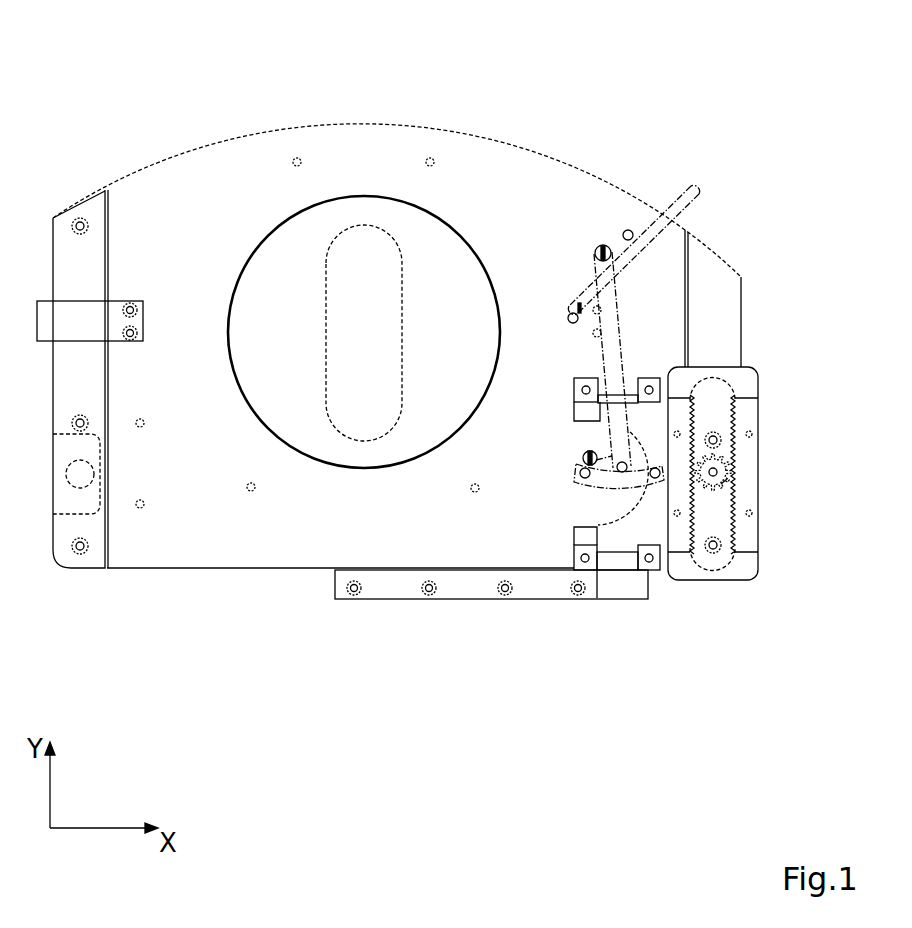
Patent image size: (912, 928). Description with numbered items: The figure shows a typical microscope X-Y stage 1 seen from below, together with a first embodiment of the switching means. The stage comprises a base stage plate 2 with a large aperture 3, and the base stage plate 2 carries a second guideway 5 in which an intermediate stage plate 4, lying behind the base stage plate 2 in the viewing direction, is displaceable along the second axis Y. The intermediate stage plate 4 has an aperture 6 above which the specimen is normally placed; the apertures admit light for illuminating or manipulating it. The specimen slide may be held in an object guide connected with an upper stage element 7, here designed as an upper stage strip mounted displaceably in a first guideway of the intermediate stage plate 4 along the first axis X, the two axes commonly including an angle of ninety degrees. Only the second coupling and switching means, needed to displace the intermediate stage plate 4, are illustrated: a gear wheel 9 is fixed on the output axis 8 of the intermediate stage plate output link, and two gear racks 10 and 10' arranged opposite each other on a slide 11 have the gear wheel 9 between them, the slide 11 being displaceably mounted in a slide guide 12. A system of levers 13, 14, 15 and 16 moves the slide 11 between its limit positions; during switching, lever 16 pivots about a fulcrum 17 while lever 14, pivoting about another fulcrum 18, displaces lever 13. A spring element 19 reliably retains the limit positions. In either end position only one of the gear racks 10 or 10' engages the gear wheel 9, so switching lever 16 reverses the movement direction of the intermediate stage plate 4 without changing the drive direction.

The X-Y stage 1 is at (124, 140).
The base stage plate 2 is at (352, 140).
The large aperture 3 is at (315, 204).
The intermediate stage plate 4 is at (65, 233).
The second guideway 5 is at (688, 245).
The aperture 6 is at (385, 228).
The upper stage element 7 is at (397, 587).
The output axis 8 is at (727, 468).
The gear wheel 9 is at (725, 490).
The gear rack 10 is at (777, 474).
The gear rack 10' is at (773, 499).
The slide 11 is at (733, 375).
The slide guide 12 is at (649, 385).
The lever 13 is at (615, 482).
The lever 14 is at (602, 460).
The lever 15 is at (613, 307).
The lever 16 is at (687, 190).
The fulcrum 17 is at (603, 245).
The fulcrum 18 is at (583, 458).
The spring element 19 is at (628, 235).